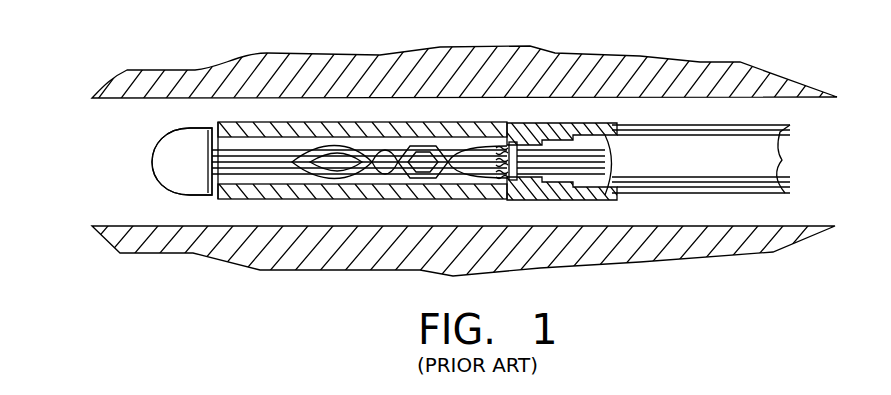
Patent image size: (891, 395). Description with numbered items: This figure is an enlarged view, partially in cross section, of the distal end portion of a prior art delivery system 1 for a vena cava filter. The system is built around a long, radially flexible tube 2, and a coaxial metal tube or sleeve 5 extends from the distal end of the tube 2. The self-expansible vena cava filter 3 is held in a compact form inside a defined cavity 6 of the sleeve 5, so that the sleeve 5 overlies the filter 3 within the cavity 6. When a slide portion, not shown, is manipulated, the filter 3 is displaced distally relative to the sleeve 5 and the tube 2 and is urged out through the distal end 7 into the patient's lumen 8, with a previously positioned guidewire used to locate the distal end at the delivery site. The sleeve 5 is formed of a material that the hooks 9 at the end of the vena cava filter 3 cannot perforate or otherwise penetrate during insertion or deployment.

The delivery system 1 is at (414, 96).
The tube 2 is at (677, 157).
The vena cava filter 3 is at (128, 193).
The sleeve 5 is at (328, 122).
The cavity 6 is at (212, 198).
The distal end 7 is at (216, 130).
The patient's lumen 8 is at (115, 99).
The hooks 9 is at (500, 138).